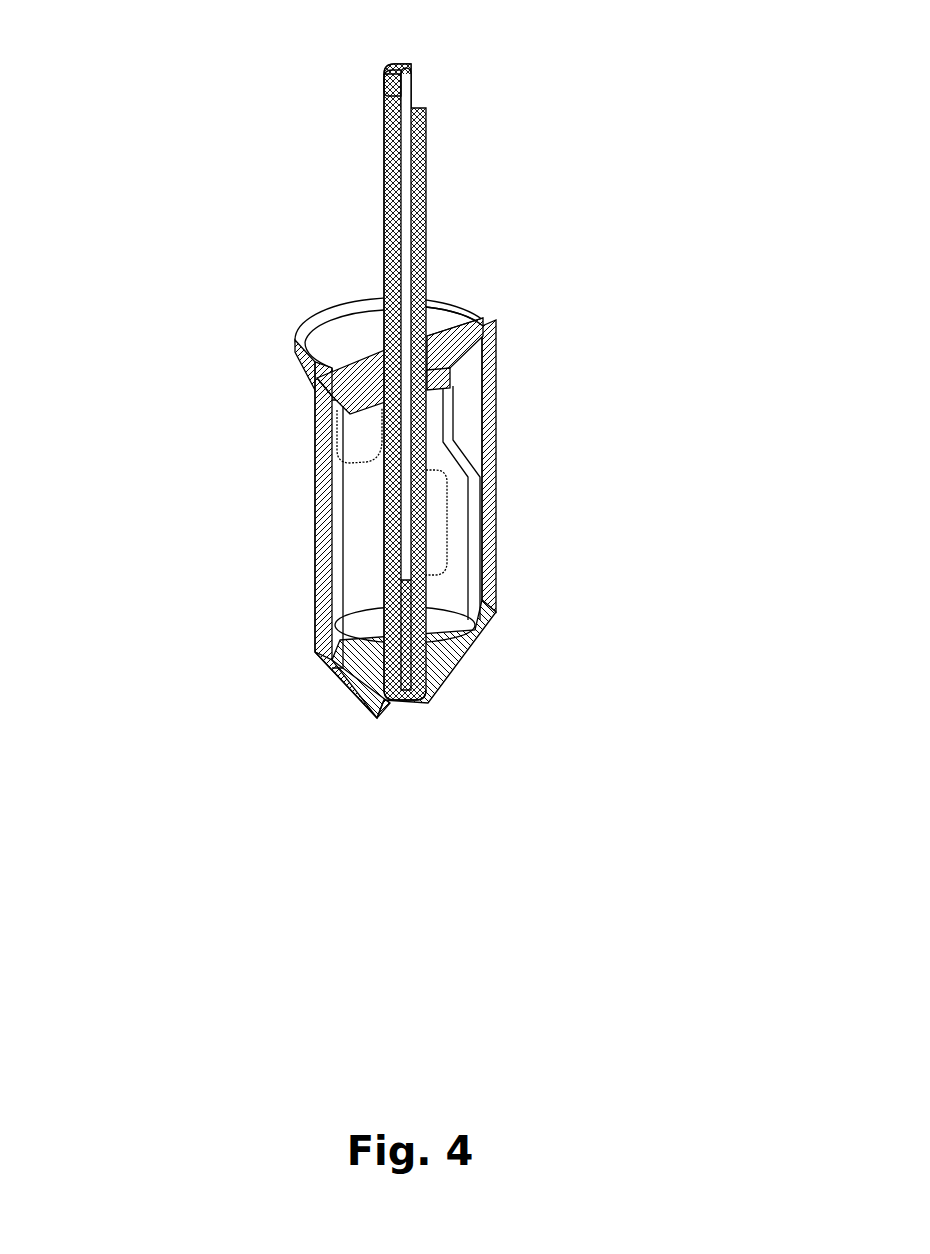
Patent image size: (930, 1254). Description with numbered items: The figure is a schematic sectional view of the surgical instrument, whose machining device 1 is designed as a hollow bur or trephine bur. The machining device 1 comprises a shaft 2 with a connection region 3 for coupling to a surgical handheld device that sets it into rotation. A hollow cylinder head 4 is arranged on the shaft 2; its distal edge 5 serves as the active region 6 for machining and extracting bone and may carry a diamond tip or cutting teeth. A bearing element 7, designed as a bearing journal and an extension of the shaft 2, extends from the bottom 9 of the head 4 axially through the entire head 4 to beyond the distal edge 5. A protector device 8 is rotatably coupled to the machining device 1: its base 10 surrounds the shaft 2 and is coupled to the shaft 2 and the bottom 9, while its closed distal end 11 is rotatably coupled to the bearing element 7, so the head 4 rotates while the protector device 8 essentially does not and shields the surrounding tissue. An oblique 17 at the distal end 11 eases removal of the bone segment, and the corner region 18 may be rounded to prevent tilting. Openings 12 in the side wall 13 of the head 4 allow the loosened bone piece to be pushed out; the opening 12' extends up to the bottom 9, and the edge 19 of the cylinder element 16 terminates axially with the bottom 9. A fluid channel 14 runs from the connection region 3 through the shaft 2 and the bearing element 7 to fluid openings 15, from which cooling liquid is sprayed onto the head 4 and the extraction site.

The machining device 1 is at (427, 125).
The shaft 2 is at (427, 238).
The connection region 3 is at (387, 95).
The head 4 is at (351, 538).
The distal edge 5 is at (323, 662).
The active region 6 is at (335, 670).
The bearing element 7 is at (417, 632).
The protector device 8 is at (340, 325).
The bottom 9 is at (483, 367).
The base 10 is at (445, 315).
The distal end 11 is at (452, 668).
The opening 12 is at (543, 516).
The opening 12' is at (434, 489).
The side wall 13 is at (460, 592).
The fluid channel 14 is at (407, 190).
The fluid opening 15 is at (345, 447).
The cylinder element 16 is at (483, 397).
The oblique 17 is at (378, 672).
The corner region 18 is at (377, 725).
The edge 19 is at (305, 392).